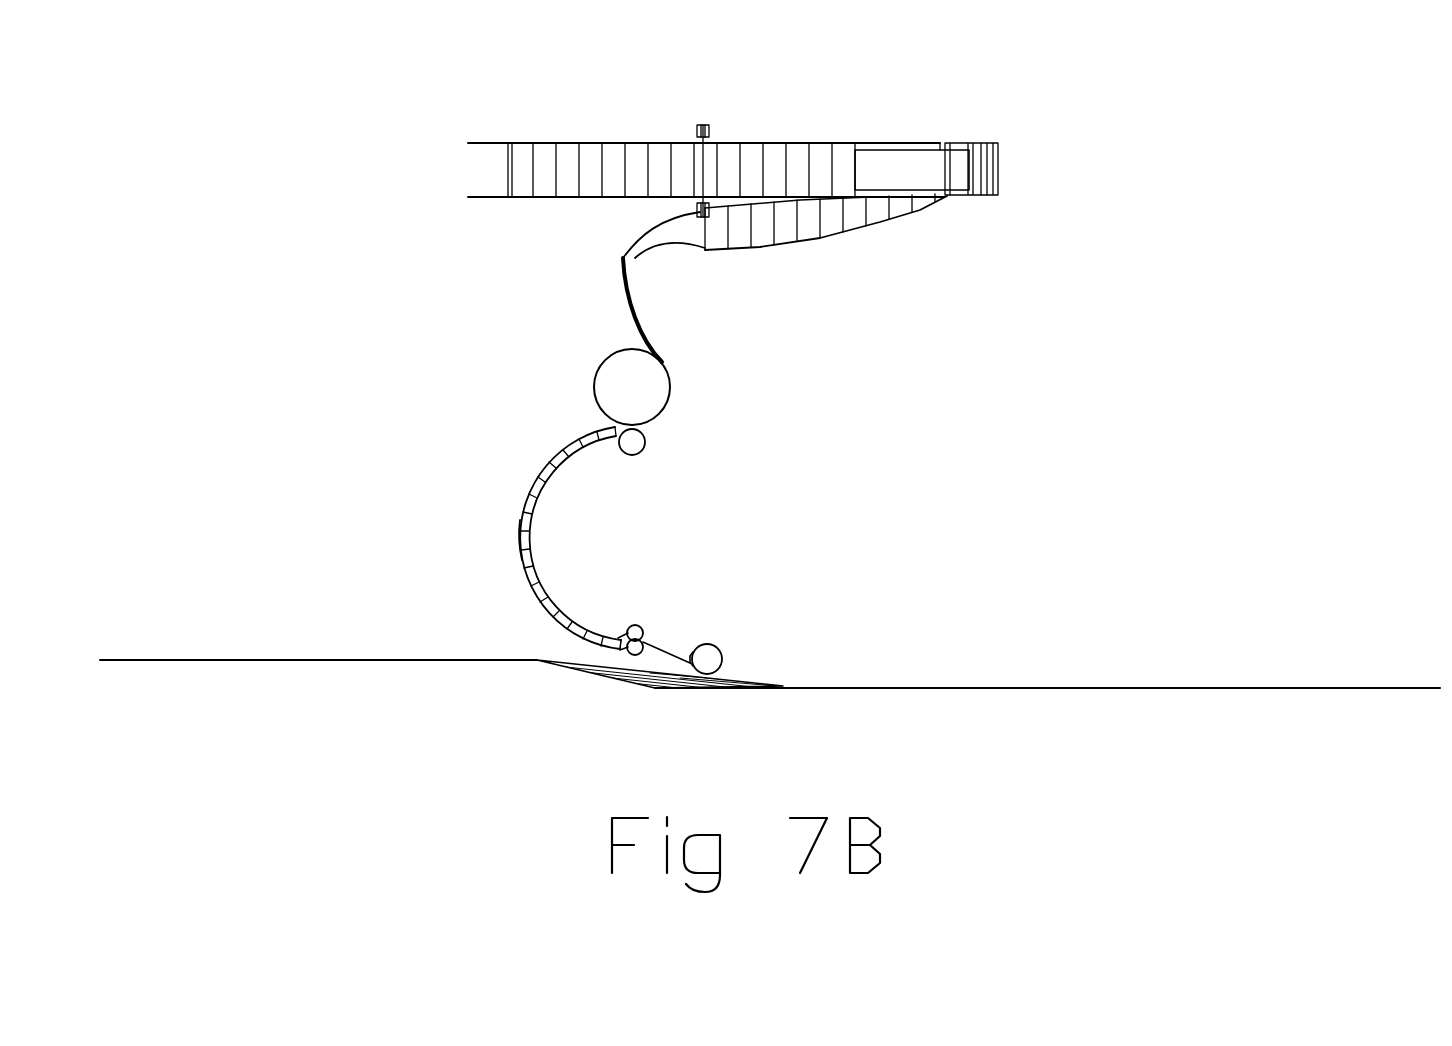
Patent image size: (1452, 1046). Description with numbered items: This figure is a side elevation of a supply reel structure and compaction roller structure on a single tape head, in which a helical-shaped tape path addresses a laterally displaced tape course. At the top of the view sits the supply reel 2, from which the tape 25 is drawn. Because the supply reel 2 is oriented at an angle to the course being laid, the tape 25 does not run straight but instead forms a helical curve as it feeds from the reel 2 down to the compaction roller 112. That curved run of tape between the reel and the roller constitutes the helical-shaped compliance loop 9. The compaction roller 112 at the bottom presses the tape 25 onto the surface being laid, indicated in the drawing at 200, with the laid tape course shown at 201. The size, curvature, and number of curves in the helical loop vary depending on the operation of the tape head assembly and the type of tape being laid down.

The supply reel 2 is at (565, 140).
The tape 25 is at (630, 285).
The helical-shaped compliance loop 9 is at (520, 545).
The compaction roller 112 is at (722, 655).
The ground surface 200 is at (1073, 686).
The ramp 201 is at (632, 682).